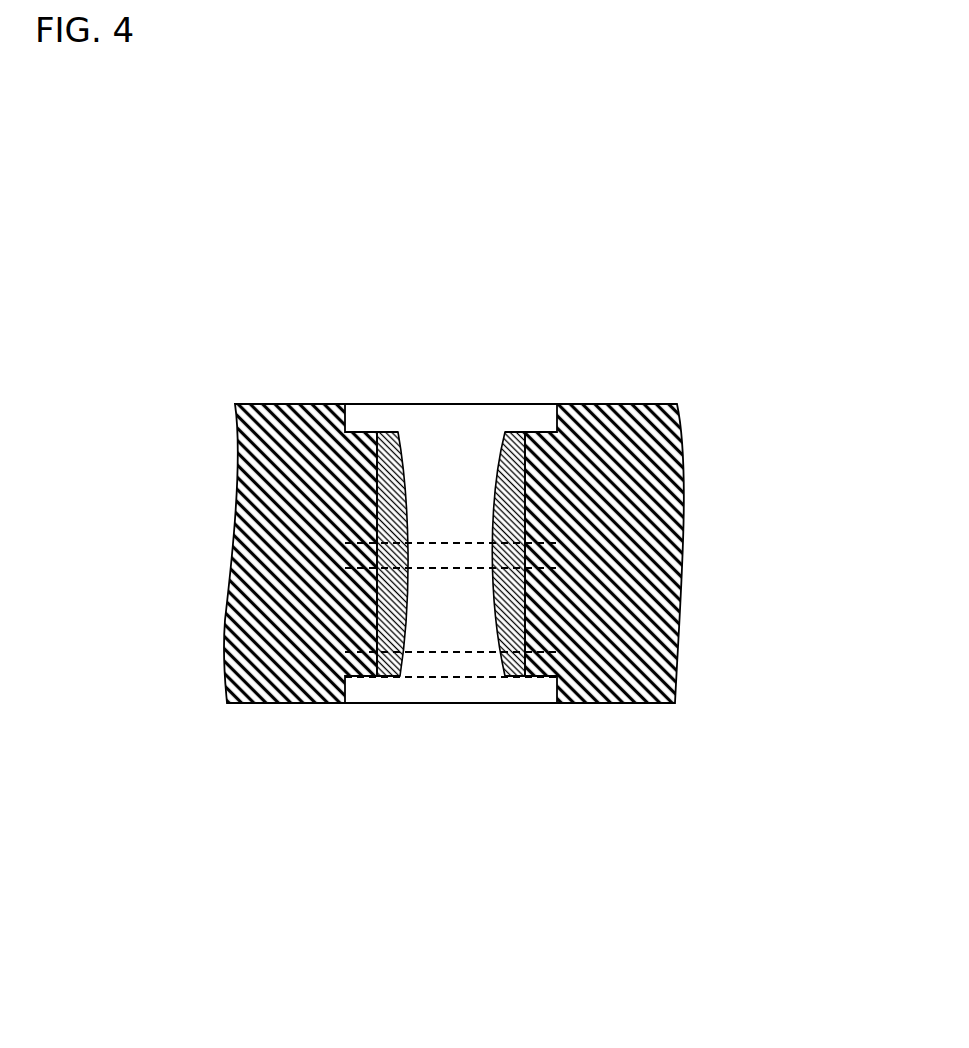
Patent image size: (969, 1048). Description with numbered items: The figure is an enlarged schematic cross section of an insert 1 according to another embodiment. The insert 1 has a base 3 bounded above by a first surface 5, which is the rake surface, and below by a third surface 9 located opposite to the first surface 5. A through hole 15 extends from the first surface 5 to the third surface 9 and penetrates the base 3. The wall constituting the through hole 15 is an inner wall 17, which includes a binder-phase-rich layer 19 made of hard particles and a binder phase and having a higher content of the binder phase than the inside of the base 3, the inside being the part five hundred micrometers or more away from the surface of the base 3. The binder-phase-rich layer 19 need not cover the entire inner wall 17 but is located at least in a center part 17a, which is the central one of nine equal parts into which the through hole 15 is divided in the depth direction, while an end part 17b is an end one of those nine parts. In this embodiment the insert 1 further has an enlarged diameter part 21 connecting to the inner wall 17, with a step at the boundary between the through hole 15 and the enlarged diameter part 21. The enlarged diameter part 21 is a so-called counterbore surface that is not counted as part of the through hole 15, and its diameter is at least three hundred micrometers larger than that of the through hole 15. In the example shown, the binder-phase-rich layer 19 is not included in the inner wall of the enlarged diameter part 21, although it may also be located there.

The insert 1 is at (316, 386).
The base 3 is at (287, 543).
The first surface 5 is at (622, 405).
The third surface 9 is at (603, 704).
The through hole 15 is at (445, 470).
The inner wall 17 is at (411, 460).
The center part 17a is at (412, 552).
The end part 17b is at (401, 660).
The binder-phase-rich layer 19 is at (492, 470).
The enlarged diameter part 21 is at (364, 692).